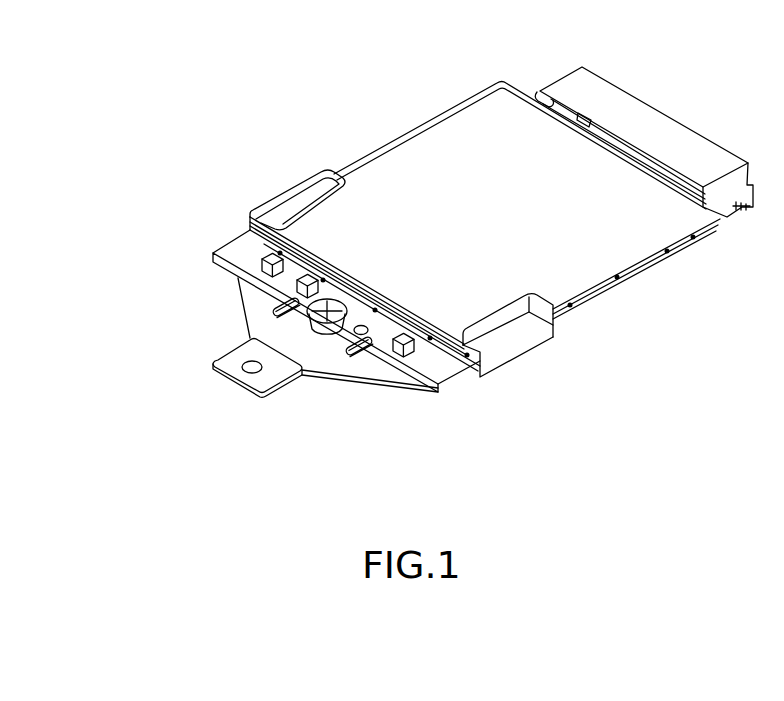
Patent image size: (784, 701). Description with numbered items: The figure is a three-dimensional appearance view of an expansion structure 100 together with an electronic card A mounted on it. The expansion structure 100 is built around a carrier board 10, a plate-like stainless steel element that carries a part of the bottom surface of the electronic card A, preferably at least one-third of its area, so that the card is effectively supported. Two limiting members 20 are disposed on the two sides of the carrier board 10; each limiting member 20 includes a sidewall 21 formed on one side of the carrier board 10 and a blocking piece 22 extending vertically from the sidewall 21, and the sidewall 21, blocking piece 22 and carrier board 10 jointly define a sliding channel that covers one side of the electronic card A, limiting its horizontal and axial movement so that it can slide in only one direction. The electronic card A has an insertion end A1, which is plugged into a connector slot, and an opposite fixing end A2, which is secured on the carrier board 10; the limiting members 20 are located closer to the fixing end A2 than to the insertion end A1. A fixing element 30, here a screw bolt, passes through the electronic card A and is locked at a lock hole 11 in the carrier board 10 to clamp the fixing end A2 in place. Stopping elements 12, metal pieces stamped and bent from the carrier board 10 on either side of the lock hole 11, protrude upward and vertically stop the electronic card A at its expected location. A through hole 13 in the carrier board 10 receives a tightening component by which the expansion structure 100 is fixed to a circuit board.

The electronic card A is at (501, 193).
The insertion end A1 is at (660, 123).
The fixing end A2 is at (306, 325).
The carrier board 10 is at (367, 367).
The lock hole 11 is at (310, 328).
The stopping element 12 is at (285, 308).
The through hole 13 is at (247, 323).
The limiting member 20 is at (543, 386).
The sidewall 21 is at (508, 392).
The blocking piece 22 is at (513, 317).
The fixing element 30 is at (317, 386).
The expansion structure 100 is at (264, 358).